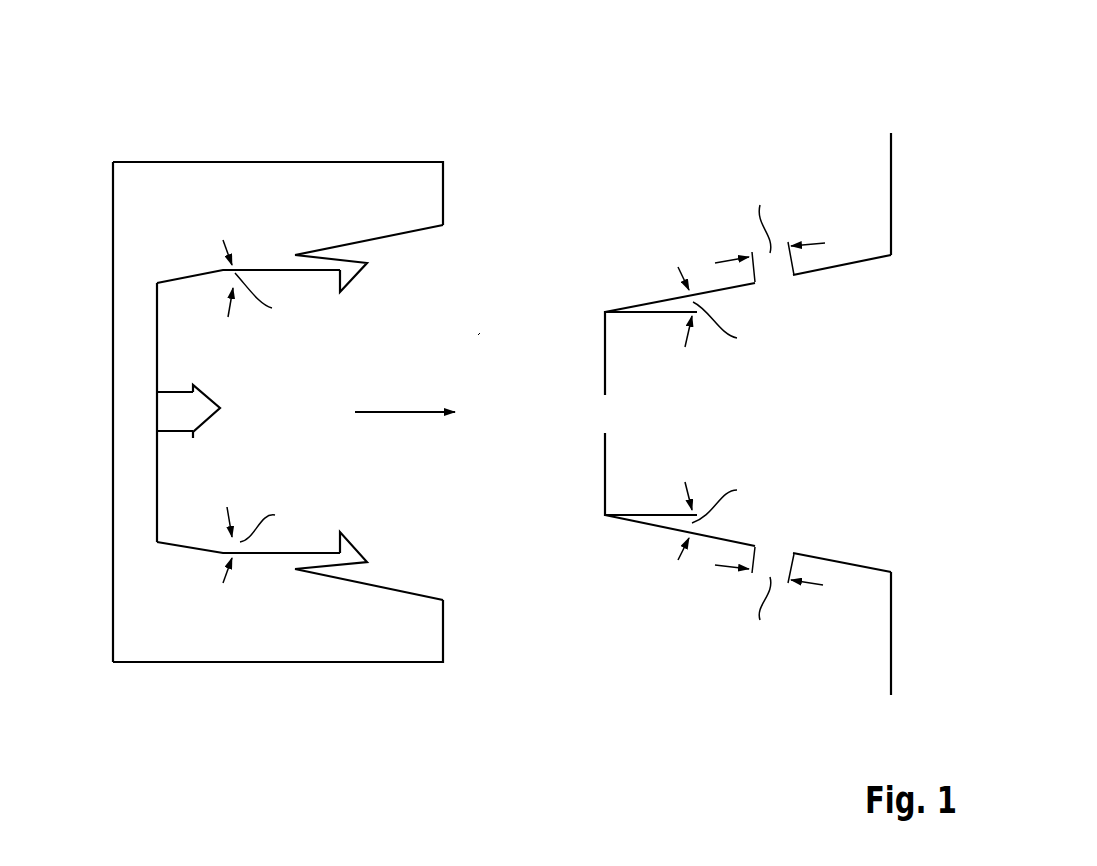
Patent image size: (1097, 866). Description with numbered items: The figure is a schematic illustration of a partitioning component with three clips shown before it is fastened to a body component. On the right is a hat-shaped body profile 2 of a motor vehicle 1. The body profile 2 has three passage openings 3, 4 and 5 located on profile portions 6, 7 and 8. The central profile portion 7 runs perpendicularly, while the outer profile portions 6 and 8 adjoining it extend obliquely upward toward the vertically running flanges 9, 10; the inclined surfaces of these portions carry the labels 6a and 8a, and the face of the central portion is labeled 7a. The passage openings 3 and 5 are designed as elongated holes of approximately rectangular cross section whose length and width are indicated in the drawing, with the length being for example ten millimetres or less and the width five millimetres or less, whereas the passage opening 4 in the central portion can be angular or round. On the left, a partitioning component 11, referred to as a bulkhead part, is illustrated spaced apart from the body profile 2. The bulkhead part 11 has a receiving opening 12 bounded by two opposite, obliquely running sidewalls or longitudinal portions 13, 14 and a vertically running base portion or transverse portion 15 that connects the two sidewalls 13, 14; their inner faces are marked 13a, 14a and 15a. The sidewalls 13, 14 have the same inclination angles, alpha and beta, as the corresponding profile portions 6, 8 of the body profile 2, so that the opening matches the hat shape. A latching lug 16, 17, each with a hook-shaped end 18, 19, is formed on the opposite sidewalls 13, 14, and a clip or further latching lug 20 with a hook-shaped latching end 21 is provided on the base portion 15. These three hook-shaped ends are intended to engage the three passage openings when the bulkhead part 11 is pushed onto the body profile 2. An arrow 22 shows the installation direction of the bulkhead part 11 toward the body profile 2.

The motor vehicle 1 is at (748, 394).
The body profile 2 is at (676, 165).
The passage opening 3 is at (748, 573).
The passage opening 4 is at (658, 360).
The passage opening 5 is at (748, 265).
The outer profile portion 6 is at (748, 573).
The flank surface 6a is at (645, 527).
The central profile portion 7 is at (606, 395).
The connecting portion surface 7a is at (604, 457).
The outer profile portion 8 is at (748, 265).
The flank surface 8a is at (645, 302).
The flange 9 is at (892, 628).
The flange 10 is at (892, 190).
The partitioning component 11 is at (168, 106).
The receiving opening 12 is at (482, 333).
The sidewall 13 is at (388, 648).
The lower arm inclined face 13a is at (412, 590).
The sidewall 14 is at (388, 172).
The upper arm inclined face 14a is at (413, 233).
The base portion 15 is at (125, 462).
The inner surface of back portion 15a is at (158, 478).
The latching lug 16 is at (318, 553).
The latching lug 17 is at (318, 265).
The hook-shaped end 18 is at (350, 552).
The hook-shaped end 19 is at (350, 275).
The latching lug 20 is at (178, 402).
The hook-shaped latching end 21 is at (207, 403).
The arrow 22 is at (407, 412).